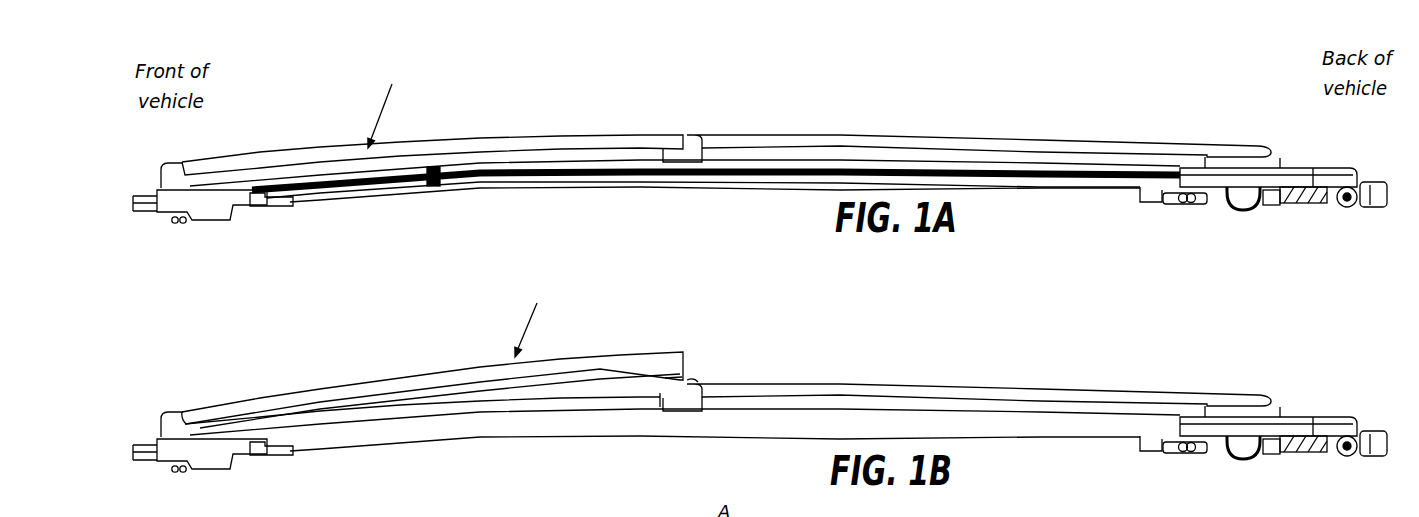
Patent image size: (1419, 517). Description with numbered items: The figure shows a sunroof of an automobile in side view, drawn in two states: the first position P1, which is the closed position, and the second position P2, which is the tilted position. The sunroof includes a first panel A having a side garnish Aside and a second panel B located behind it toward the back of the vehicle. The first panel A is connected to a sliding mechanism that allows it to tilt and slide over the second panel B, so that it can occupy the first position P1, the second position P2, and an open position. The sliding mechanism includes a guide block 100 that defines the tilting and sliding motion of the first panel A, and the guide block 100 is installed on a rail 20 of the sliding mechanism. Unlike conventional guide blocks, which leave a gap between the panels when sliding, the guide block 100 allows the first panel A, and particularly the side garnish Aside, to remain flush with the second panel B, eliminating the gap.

In FIG. 1A, the first panel A is at (583, 137).
In FIG. 1B, the first panel A is at (623, 353).
In FIG. 1A, the second panel B is at (1048, 138).
In FIG. 1B, the second panel B is at (1082, 380).
In FIG. 1A, the first position P1 is at (389, 104).
In FIG. 1B, the second position P2 is at (535, 319).
In FIG. 1B, the side garnish Aside is at (667, 378).
In FIG. 1A, the rail 20 is at (353, 192).
In FIG. 1A, the guide block 100 is at (437, 190).